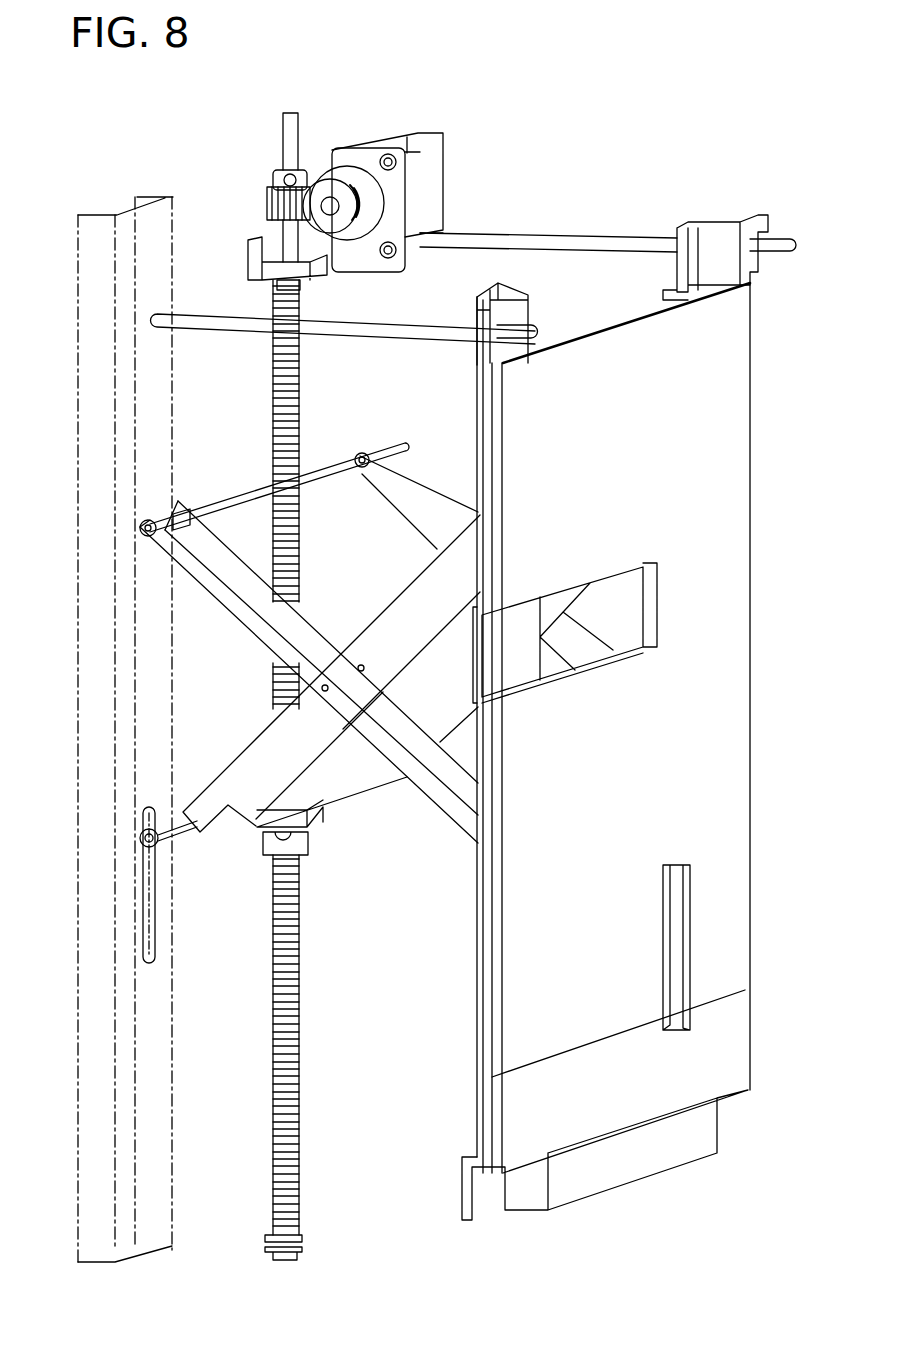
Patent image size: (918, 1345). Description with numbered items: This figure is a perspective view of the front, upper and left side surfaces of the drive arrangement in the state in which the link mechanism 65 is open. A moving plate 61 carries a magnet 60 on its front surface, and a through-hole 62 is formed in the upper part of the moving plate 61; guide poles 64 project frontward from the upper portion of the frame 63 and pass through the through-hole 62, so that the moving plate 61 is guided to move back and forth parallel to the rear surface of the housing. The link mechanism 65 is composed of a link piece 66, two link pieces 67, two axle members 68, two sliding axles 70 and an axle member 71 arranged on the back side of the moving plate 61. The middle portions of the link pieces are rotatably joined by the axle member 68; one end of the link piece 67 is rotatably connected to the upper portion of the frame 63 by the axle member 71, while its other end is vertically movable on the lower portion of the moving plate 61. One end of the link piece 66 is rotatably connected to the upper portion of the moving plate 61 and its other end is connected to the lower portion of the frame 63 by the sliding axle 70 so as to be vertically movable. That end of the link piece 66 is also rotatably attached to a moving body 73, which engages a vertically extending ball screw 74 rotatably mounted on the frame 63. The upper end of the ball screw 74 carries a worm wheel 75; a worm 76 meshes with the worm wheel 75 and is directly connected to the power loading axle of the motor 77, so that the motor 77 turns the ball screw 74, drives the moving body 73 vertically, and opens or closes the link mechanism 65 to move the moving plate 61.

The magnet 60 is at (730, 940).
The moving plate 61 is at (740, 1028).
The through-hole 62 is at (503, 363).
The frame 63 is at (88, 282).
The guide poles 64 is at (440, 320).
The link mechanism 65 is at (231, 636).
The link piece 66 is at (392, 612).
The link pieces 67 is at (428, 485).
The axle members 68 is at (325, 692).
The sliding axles 70 is at (178, 845).
The axle member 71 is at (232, 498).
The moving body 73 is at (312, 852).
The ball screw 74 is at (302, 380).
The worm wheel 75 is at (268, 198).
The worm 76 is at (340, 183).
The motor 77 is at (440, 170).